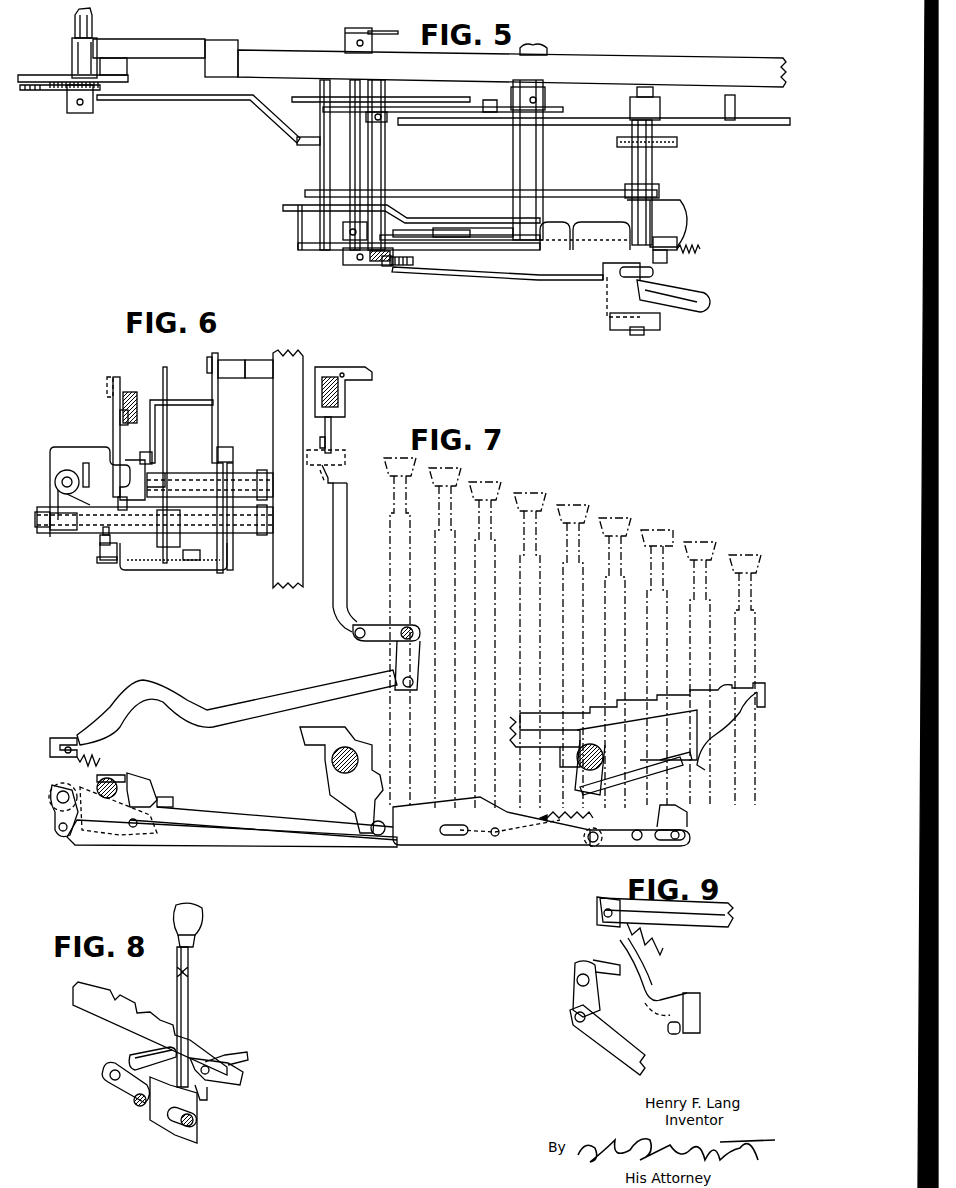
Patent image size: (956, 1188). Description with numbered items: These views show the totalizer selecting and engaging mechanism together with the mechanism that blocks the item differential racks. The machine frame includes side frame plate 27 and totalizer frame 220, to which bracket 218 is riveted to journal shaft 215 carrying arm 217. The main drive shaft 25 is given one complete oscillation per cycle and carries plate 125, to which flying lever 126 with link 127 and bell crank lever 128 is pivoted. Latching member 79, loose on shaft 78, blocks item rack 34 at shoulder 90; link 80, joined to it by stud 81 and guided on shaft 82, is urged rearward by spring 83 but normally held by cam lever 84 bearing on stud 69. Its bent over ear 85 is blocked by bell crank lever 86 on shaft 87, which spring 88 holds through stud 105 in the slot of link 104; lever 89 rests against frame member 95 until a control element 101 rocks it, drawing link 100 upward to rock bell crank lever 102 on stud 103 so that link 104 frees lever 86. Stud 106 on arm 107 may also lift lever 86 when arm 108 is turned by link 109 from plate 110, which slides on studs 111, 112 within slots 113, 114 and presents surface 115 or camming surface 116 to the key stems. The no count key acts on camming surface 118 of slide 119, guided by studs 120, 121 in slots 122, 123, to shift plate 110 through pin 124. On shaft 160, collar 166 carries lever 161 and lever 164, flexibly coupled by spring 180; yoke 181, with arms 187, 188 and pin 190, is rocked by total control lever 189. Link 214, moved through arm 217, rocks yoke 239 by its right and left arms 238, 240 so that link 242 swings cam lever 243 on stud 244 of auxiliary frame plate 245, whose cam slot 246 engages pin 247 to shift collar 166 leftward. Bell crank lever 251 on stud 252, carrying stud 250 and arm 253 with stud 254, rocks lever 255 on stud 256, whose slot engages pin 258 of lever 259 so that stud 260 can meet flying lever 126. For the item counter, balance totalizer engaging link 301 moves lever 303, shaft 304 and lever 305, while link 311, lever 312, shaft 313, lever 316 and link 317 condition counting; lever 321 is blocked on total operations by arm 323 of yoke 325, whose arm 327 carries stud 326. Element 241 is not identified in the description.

In FIG. 5, the main drive shaft 25 is at (515, 138).
In FIG. 7, the main drive shaft 25 is at (332, 760).
In FIG. 5, the side frame plate 27 is at (278, 57).
In FIG. 6, the side frame plate 27 is at (273, 412).
In FIG. 7, the differential rack 34 is at (548, 712).
In FIG. 7, the stud 69 is at (380, 836).
In FIG. 7, the shaft 78 is at (578, 767).
In FIG. 7, the latching member 79 is at (650, 783).
In FIG. 7, the link 80 is at (266, 814).
In FIG. 7, the stud 81 is at (590, 845).
In FIG. 7, the shaft 82 is at (115, 782).
In FIG. 7, the spring 83 is at (560, 813).
In FIG. 7, the cam lever 84 is at (340, 790).
In FIG. 7, the bent over ear 85 is at (157, 785).
In FIG. 7, the bell crank lever 86 is at (112, 835).
In FIG. 9, the bell crank lever 86 is at (640, 990).
In FIG. 7, the shaft 87 is at (52, 797).
In FIG. 9, the shaft 87 is at (577, 980).
In FIG. 7, the spring 88 is at (100, 762).
In FIG. 9, the spring 88 is at (655, 955).
In FIG. 7, the lever 89 is at (332, 440).
In FIG. 7, the shoulder 90 is at (688, 775).
In FIG. 7, the frame member 95 is at (345, 460).
In FIG. 7, the link 100 is at (347, 500).
In FIG. 7, the control element 101 is at (345, 410).
In FIG. 7, the bell crank lever 102 is at (375, 625).
In FIG. 7, the stud 103 is at (410, 630).
In FIG. 7, the link 104 is at (262, 700).
In FIG. 9, the link 104 is at (712, 927).
In FIG. 7, the stud 105 is at (75, 740).
In FIG. 9, the stud 105 is at (600, 920).
In FIG. 7, the stud 106 is at (135, 828).
In FIG. 9, the stud 106 is at (676, 1034).
In FIG. 9, the arm 107 is at (665, 1015).
In FIG. 7, the arm 108 is at (52, 820).
In FIG. 9, the arm 108 is at (575, 1000).
In FIG. 7, the link 109 is at (205, 840).
In FIG. 9, the link 109 is at (615, 1048).
In FIG. 7, the plate 110 is at (505, 843).
In FIG. 8, the plate 110 is at (98, 1000).
In FIG. 7, the stud 111 is at (463, 838).
In FIG. 7, the stud 112 is at (690, 838).
In FIG. 8, the stud 112 is at (240, 1076).
In FIG. 7, the slot 113 is at (445, 835).
In FIG. 7, the slot 114 is at (640, 842).
In FIG. 7, the surface 115 is at (173, 800).
In FIG. 9, the surface 115 is at (700, 1015).
In FIG. 7, the camming surface 116 is at (690, 815).
In FIG. 8, the camming surface 116 is at (245, 1053).
In FIG. 8, the camming surface 118 is at (207, 1095).
In FIG. 8, the slide 119 is at (158, 1118).
In FIG. 8, the stud 120 is at (195, 1122).
In FIG. 8, the stud 121 is at (140, 1107).
In FIG. 8, the slot 122 is at (115, 1093).
In FIG. 8, the slot 123 is at (178, 1128).
In FIG. 7, the pin 124 is at (622, 520).
In FIG. 8, the pin 124 is at (130, 1058).
In FIG. 5, the plate 125 is at (508, 228).
In FIG. 5, the flying lever 126 is at (558, 230).
In FIG. 5, the link 127 is at (283, 208).
In FIG. 5, the bell crank lever 128 is at (425, 233).
In FIG. 5, the shaft 160 is at (625, 321).
In FIG. 6, the shaft 160 is at (60, 532).
In FIG. 6, the lever 161 is at (118, 502).
In FIG. 5, the lever 164 is at (700, 248).
In FIG. 6, the lever 164 is at (105, 536).
In FIG. 5, the collar 166 is at (653, 272).
In FIG. 6, the collar 166 is at (72, 530).
In FIG. 5, the spring 180 is at (678, 243).
In FIG. 5, the yoke 181 is at (668, 219).
In FIG. 6, the yoke 181 is at (150, 570).
In FIG. 5, the arm 187 is at (659, 192).
In FIG. 6, the arm 187 is at (160, 575).
In FIG. 5, the arm 188 is at (677, 143).
In FIG. 6, the arm 188 is at (223, 535).
In FIG. 5, the total control lever 189 is at (672, 124).
In FIG. 6, the total control lever 189 is at (233, 570).
In FIG. 5, the pin 190 is at (667, 257).
In FIG. 6, the pin 190 is at (105, 556).
In FIG. 5, the link 214 is at (106, 101).
In FIG. 5, the shaft 215 is at (75, 25).
In FIG. 5, the arm 217 is at (70, 108).
In FIG. 5, the bracket 218 is at (65, 92).
In FIG. 5, the totalizer frame 220 is at (72, 73).
In FIG. 5, the right arm 238 is at (297, 141).
In FIG. 5, the yoke 239 is at (298, 225).
In FIG. 5, the left arm 240 is at (298, 247).
In FIG. 5, the post 241 is at (320, 162).
In FIG. 5, the link 242 is at (448, 276).
In FIG. 6, the link 242 is at (86, 466).
In FIG. 5, the cam lever 243 is at (603, 272).
In FIG. 6, the cam lever 243 is at (120, 418).
In FIG. 6, the stud 244 is at (107, 380).
In FIG. 5, the auxiliary frame plate 245 is at (490, 240).
In FIG. 6, the auxiliary frame plate 245 is at (113, 380).
In FIG. 5, the cam slot 246 is at (706, 302).
In FIG. 6, the cam slot 246 is at (55, 484).
In FIG. 5, the pin 247 is at (607, 293).
In FIG. 6, the pin 247 is at (58, 503).
In FIG. 6, the stud 250 is at (225, 447).
In FIG. 6, the bell crank lever 251 is at (218, 394).
In FIG. 6, the stud 252 is at (208, 360).
In FIG. 6, the arm 253 is at (170, 403).
In FIG. 6, the stud 254 is at (152, 458).
In FIG. 6, the lever 255 is at (163, 400).
In FIG. 6, the stud 256 is at (160, 478).
In FIG. 6, the pin 258 is at (152, 448).
In FIG. 6, the lever 259 is at (130, 392).
In FIG. 6, the stud 260 is at (125, 447).
In FIG. 5, the balance totalizer engaging link 301 is at (298, 98).
In FIG. 5, the lever 303 is at (360, 110).
In FIG. 5, the shaft 304 is at (386, 139).
In FIG. 5, the lever 305 is at (390, 266).
In FIG. 5, the link 311 is at (413, 261).
In FIG. 5, the lever 312 is at (370, 266).
In FIG. 5, the shaft 313 is at (350, 176).
In FIG. 5, the lever 316 is at (345, 34).
In FIG. 5, the link 317 is at (380, 35).
In FIG. 5, the lever 321 is at (345, 241).
In FIG. 6, the arm 323 is at (100, 540).
In FIG. 6, the yoke 325 is at (105, 563).
In FIG. 6, the stud 326 is at (190, 560).
In FIG. 6, the arm 327 is at (160, 540).